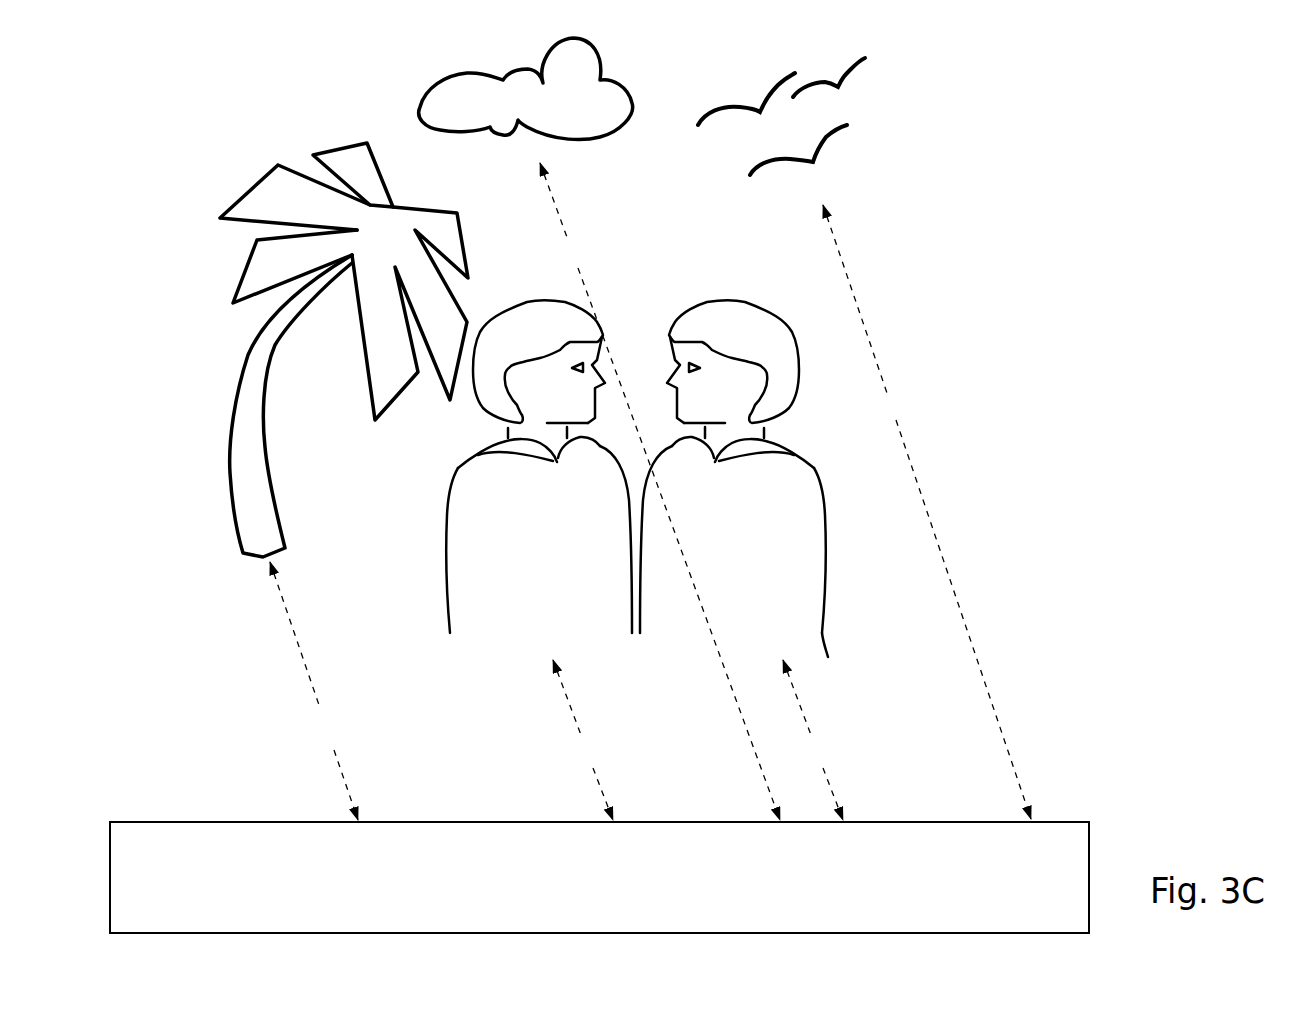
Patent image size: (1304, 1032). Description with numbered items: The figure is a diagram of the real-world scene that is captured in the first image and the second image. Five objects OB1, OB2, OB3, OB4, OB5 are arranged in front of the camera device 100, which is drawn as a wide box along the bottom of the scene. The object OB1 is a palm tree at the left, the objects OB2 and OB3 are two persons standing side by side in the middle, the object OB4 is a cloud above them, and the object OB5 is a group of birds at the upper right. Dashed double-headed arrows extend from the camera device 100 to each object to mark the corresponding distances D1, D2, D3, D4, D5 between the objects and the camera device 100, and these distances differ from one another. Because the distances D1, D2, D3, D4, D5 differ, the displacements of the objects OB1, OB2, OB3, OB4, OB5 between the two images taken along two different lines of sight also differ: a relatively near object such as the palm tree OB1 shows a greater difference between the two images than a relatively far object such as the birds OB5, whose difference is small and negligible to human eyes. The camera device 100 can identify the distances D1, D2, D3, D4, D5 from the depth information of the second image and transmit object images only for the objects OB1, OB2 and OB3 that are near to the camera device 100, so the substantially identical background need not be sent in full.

The object OB1 is at (257, 192).
The object OB2 is at (510, 553).
The object OB3 is at (770, 590).
The object OB4 is at (445, 105).
The object OB5 is at (760, 105).
The distance D1 is at (314, 691).
The distance D2 is at (583, 740).
The distance D3 is at (813, 740).
The distance D4 is at (660, 491).
The distance D5 is at (927, 512).
The camera device 100 is at (695, 906).